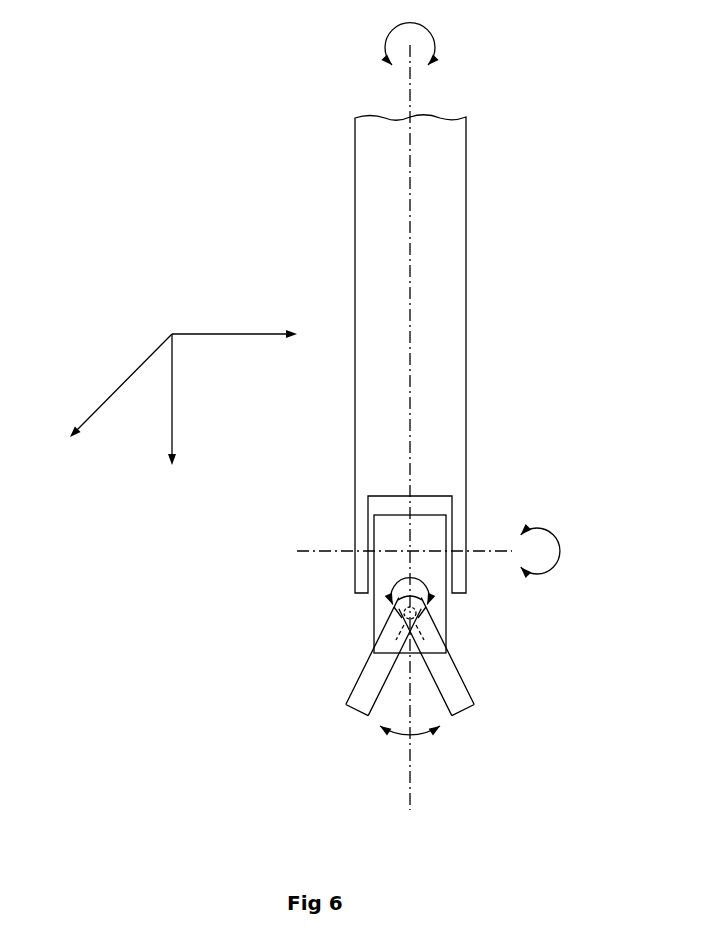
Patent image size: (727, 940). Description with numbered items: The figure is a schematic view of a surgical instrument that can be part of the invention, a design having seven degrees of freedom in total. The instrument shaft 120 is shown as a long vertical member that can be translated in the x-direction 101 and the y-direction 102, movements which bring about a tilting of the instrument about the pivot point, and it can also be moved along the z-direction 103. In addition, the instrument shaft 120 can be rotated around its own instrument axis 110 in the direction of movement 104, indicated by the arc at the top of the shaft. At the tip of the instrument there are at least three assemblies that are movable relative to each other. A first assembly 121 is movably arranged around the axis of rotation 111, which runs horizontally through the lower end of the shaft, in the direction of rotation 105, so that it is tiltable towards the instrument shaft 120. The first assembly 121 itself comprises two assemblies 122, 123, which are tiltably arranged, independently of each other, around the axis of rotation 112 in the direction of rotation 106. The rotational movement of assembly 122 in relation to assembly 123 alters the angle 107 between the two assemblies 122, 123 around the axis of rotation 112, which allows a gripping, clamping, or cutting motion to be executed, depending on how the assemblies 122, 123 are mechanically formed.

The x-direction 101 is at (252, 335).
The y-direction 102 is at (113, 398).
The z-direction 103 is at (178, 412).
The direction of movement 104 is at (436, 41).
The direction of rotation 105 is at (530, 530).
The direction of rotation 106 is at (428, 580).
The angle 107 is at (400, 737).
The instrument axis 110 is at (407, 101).
The axis of rotation 111 is at (328, 548).
The axis of rotation 112 is at (402, 622).
The instrument shaft 120 is at (363, 168).
The first assembly 121 is at (386, 567).
The assembly 122 is at (355, 696).
The assembly 123 is at (466, 685).